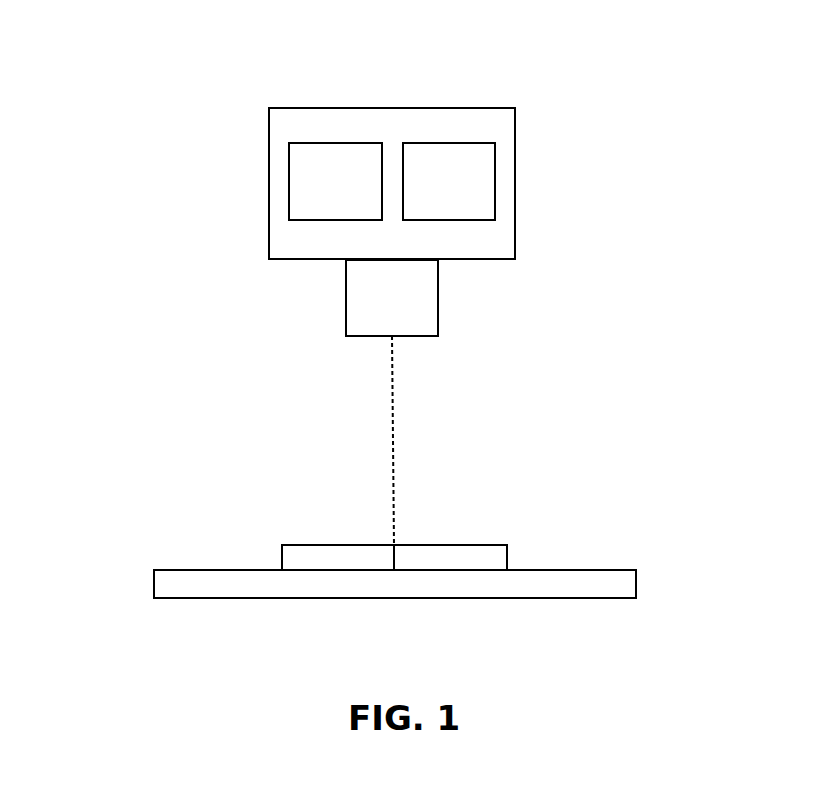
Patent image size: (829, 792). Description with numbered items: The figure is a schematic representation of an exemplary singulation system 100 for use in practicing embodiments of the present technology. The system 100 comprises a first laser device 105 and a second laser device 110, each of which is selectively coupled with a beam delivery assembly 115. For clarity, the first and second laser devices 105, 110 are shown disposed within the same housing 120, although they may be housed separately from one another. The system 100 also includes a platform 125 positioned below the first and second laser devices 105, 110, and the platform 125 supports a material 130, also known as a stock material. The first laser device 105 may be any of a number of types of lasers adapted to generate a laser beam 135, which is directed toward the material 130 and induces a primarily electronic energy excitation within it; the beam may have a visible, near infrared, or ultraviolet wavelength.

The singulation system 100 is at (125, 72).
The first laser device 105 is at (335, 181).
The second laser device 110 is at (449, 181).
The beam delivery assembly 115 is at (441, 298).
The housing 120 is at (515, 187).
The platform 125 is at (636, 583).
The material 130 is at (507, 555).
The laser beam 135 is at (394, 470).